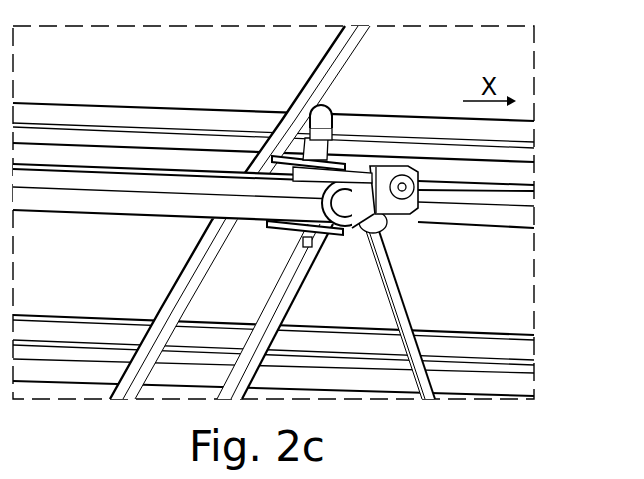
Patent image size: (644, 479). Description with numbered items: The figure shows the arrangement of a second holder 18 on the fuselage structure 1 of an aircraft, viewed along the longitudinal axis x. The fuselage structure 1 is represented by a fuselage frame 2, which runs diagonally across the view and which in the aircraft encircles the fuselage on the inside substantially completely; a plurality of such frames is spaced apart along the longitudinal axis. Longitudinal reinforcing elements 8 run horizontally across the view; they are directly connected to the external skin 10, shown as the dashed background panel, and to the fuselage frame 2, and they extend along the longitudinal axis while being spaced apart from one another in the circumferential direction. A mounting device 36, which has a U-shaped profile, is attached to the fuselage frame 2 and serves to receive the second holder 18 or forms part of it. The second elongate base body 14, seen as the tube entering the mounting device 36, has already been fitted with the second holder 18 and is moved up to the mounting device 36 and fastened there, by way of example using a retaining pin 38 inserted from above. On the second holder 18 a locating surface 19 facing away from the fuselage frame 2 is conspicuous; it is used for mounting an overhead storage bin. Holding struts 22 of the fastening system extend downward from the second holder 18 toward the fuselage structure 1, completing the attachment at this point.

The fuselage structure 1 is at (113, 112).
The fuselage frame 2 is at (322, 60).
The longitudinal reinforcing element 8 is at (313, 188).
The external skin 10 is at (537, 258).
The second elongate base body 14 is at (317, 216).
The second holder 18 is at (386, 228).
The locating surface 19 is at (414, 176).
The holding strut 22 is at (398, 307).
The mounting device 36 is at (292, 160).
The retaining pin 38 is at (318, 150).